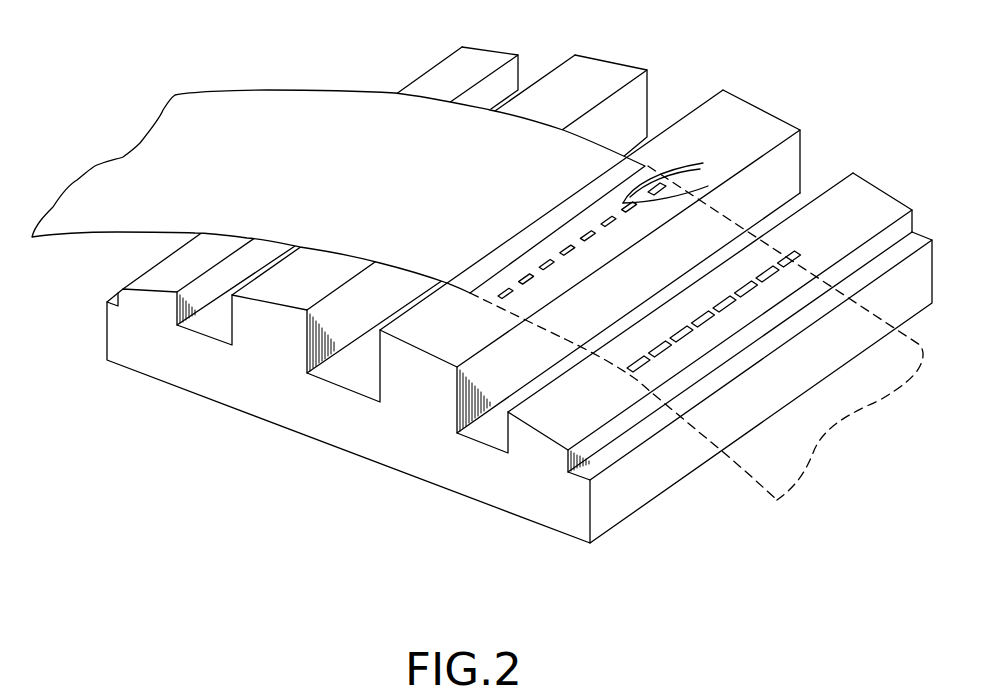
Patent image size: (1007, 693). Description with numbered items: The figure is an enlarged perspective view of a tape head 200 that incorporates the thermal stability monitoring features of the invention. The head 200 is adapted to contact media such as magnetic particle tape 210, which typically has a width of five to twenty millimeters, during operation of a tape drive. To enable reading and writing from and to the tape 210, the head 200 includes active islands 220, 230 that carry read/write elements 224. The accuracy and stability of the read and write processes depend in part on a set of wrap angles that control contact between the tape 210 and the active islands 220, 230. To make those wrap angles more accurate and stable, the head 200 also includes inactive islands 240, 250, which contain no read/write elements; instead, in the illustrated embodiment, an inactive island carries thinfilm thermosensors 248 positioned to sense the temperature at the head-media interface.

The tape head 200 is at (120, 372).
The tape 210 is at (210, 92).
The active island 220 is at (375, 378).
The read/write elements 224 is at (623, 218).
The active island 230 is at (227, 328).
The inactive island 240 is at (500, 435).
The thinfilm thermosensors 248 is at (686, 335).
The inactive island 250 is at (133, 278).